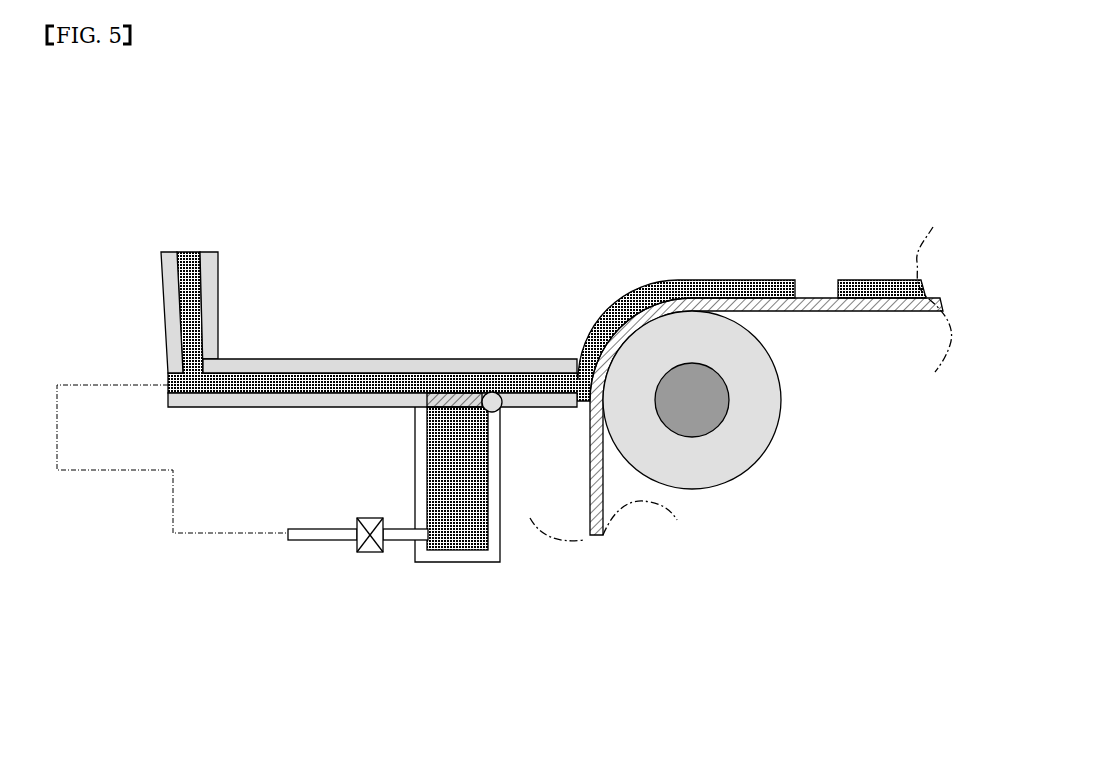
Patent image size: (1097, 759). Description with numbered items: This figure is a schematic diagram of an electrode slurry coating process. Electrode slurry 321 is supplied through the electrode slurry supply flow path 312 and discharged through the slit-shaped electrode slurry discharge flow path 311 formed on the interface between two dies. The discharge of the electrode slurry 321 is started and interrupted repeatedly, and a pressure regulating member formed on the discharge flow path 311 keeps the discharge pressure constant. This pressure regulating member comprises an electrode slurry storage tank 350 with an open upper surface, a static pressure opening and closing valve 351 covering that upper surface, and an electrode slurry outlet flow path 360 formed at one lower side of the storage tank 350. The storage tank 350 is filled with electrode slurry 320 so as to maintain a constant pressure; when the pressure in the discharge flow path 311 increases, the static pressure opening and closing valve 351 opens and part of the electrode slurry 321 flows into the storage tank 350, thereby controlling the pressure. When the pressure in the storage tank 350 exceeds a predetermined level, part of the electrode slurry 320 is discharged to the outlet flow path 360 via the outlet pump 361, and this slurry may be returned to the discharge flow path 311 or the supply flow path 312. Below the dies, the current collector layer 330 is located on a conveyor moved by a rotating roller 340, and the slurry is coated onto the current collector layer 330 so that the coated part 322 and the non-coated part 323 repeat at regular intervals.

The electrode slurry discharge flow path 311 is at (528, 358).
The electrode slurry supply flow path 312 is at (218, 288).
The electrode slurry 320 is at (457, 520).
The electrode slurry 321 is at (262, 385).
The coated part 322 is at (727, 280).
The non-coated part 323 is at (815, 285).
The current collector layer 330 is at (780, 313).
The rotating roller 340 is at (780, 425).
The electrode slurry storage tank 350 is at (503, 520).
The static pressure opening and closing valve 351 is at (452, 400).
The electrode slurry outlet flow path 360 is at (312, 543).
The outlet pump 361 is at (373, 553).